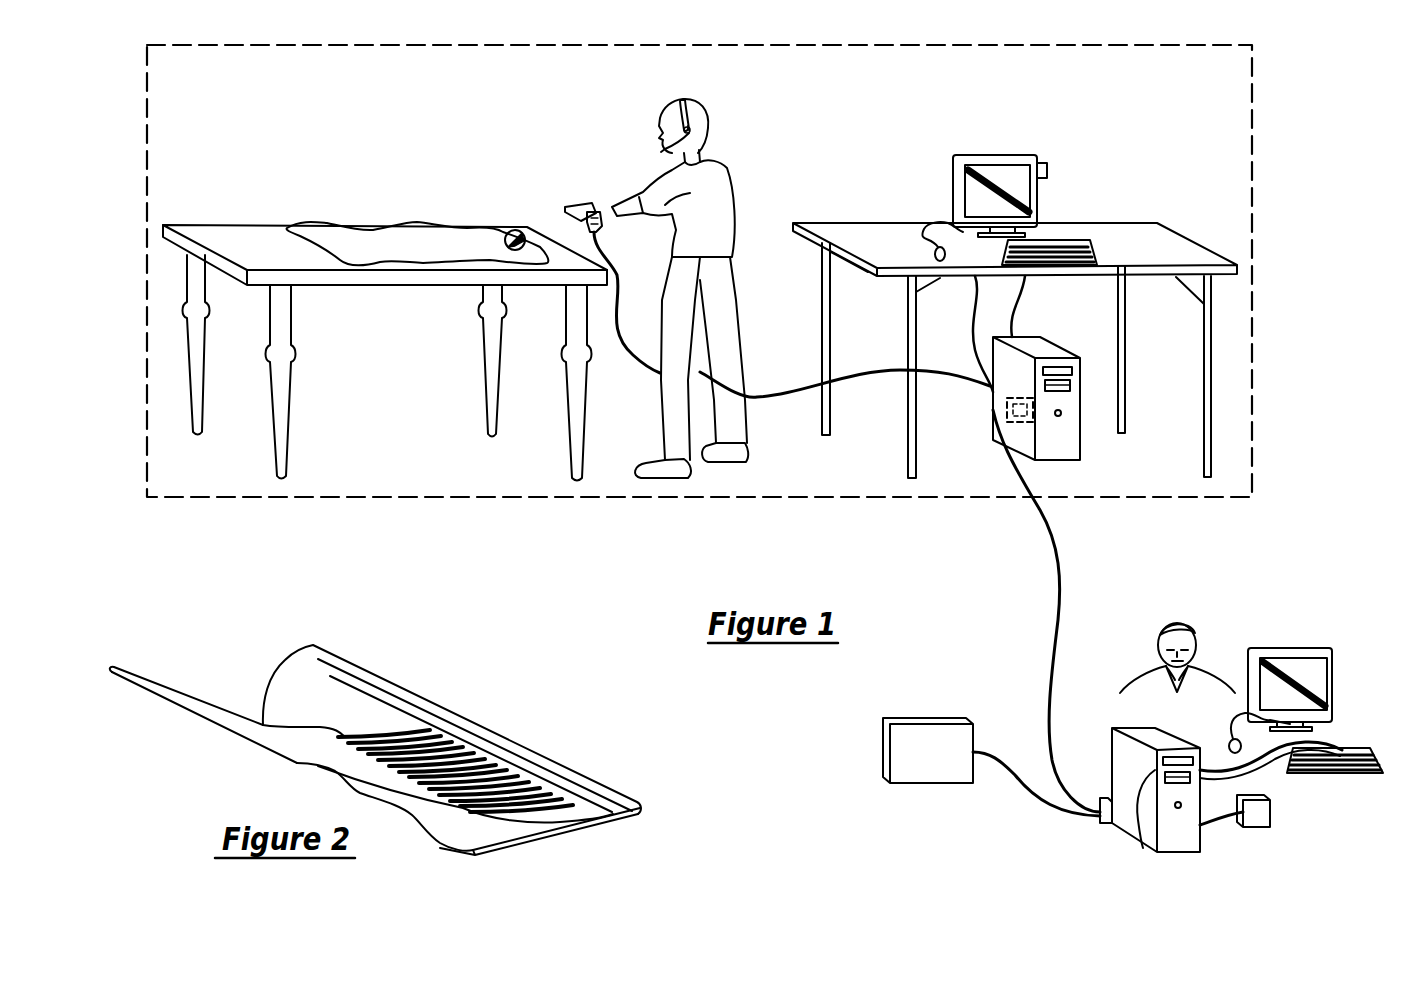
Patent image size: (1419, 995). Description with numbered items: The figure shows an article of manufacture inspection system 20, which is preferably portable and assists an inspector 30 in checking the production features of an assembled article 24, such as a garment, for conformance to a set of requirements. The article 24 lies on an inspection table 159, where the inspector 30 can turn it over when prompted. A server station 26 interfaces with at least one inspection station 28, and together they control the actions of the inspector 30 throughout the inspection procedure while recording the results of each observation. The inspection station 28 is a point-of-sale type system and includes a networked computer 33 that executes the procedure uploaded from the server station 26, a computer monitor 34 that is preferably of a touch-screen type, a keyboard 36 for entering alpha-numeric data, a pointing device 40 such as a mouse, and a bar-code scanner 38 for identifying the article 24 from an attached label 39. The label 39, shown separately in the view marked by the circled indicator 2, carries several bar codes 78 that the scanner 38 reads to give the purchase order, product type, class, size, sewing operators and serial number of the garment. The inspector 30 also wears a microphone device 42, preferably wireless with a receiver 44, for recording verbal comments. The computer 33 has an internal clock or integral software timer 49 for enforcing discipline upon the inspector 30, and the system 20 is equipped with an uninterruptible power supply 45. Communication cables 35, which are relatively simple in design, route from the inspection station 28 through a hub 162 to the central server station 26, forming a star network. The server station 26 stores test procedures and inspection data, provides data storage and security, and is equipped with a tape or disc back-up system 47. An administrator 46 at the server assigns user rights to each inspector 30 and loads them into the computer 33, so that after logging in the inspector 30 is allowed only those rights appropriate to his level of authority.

In FIG. 1, the article of manufacture inspection system 20 is at (1300, 72).
In FIG. 1, the article of manufacture 24 is at (418, 235).
In FIG. 2, the article of manufacture 24 is at (526, 720).
In FIG. 1, the server station 26 is at (975, 820).
In FIG. 1, the inspection station 28 is at (1260, 210).
In FIG. 1, the inspector 30 is at (695, 85).
In FIG. 1, the networked computer 33 is at (1090, 443).
In FIG. 1, the computer monitor 34 is at (1005, 172).
In FIG. 1, the communication cables 35 is at (1058, 592).
In FIG. 1, the keyboard 36 is at (1098, 245).
In FIG. 1, the bar-code scanner 38 is at (580, 200).
In FIG. 2, the label 39 is at (239, 692).
In FIG. 1, the pointing device 40 is at (937, 247).
In FIG. 1, the microphone device 42 is at (700, 115).
In FIG. 1, the receiver 44 is at (1048, 170).
In FIG. 1, the uninterruptible power supply 45 is at (1272, 812).
In FIG. 1, the administrator 46 is at (1202, 610).
In FIG. 1, the back-up system 47 is at (1070, 370).
In FIG. 1, the internal clock or integral software timer 49 is at (996, 410).
In FIG. 2, the bar codes 78 is at (400, 725).
In FIG. 1, the inspection table 159 is at (234, 241).
In FIG. 1, the hub 162 is at (1100, 797).
In FIG. 1, the view indicator for figure 2 is at (512, 230).